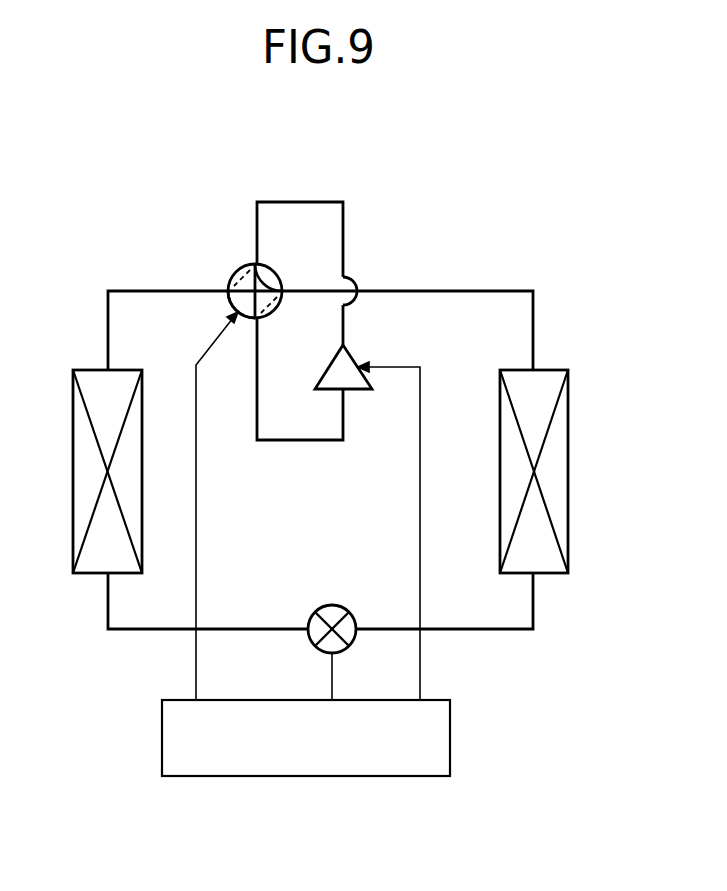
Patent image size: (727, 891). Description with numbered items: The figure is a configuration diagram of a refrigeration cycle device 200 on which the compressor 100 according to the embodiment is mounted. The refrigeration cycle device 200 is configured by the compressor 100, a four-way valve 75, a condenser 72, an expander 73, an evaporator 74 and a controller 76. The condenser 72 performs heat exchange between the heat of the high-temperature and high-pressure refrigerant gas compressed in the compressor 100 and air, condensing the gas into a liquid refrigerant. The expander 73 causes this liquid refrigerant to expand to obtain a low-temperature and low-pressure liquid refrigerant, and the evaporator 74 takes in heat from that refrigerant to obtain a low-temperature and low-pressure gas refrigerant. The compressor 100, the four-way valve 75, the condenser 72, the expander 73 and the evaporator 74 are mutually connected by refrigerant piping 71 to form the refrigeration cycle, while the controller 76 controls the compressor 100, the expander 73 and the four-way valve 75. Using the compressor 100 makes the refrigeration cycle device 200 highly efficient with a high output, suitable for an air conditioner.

The refrigeration cycle device 200 is at (330, 141).
The refrigerant piping 71 is at (498, 291).
The condenser 72 is at (551, 369).
The expander 73 is at (331, 605).
The evaporator 74 is at (92, 369).
The four-way valve 75 is at (233, 273).
The controller 76 is at (252, 699).
The compressor 100 is at (358, 363).